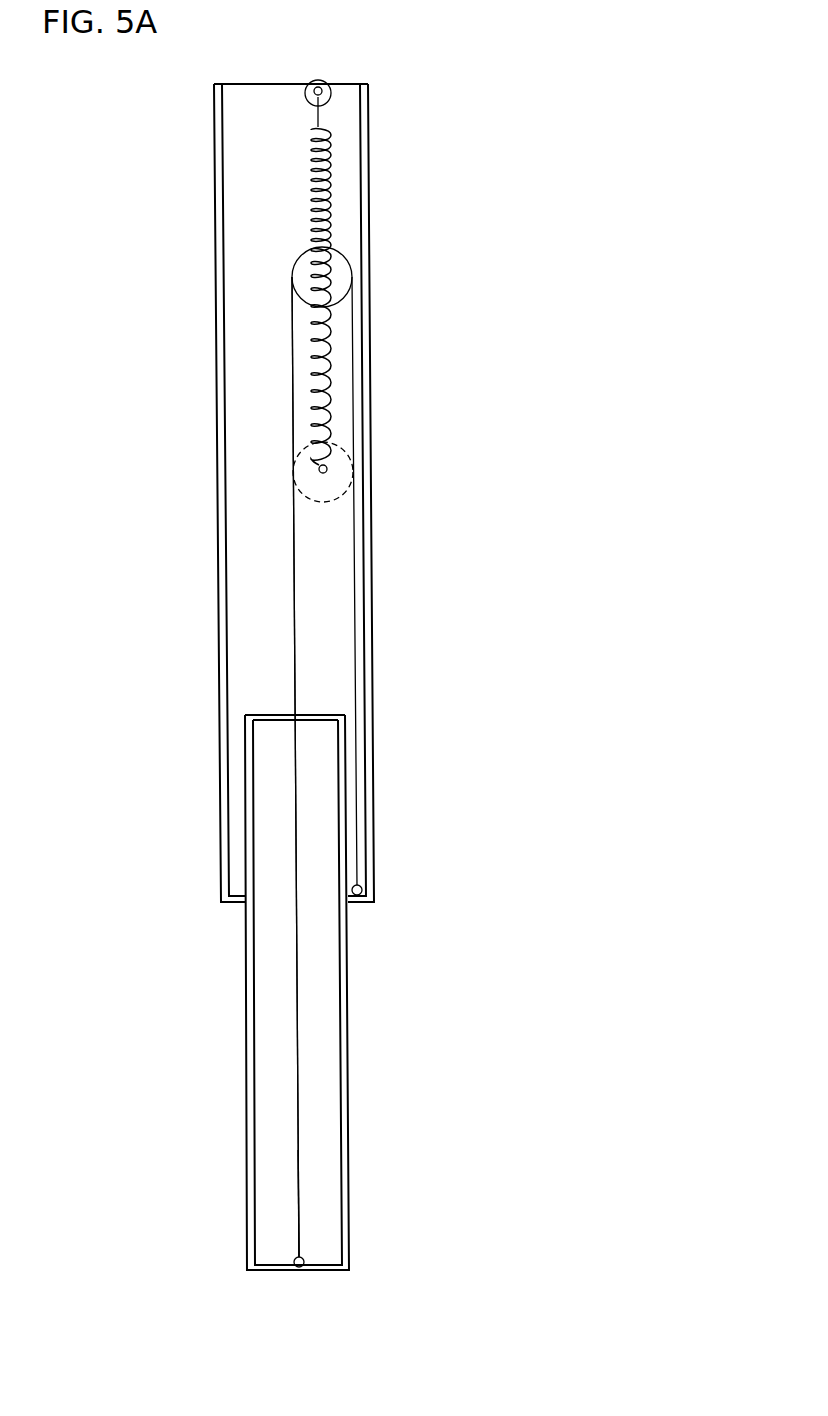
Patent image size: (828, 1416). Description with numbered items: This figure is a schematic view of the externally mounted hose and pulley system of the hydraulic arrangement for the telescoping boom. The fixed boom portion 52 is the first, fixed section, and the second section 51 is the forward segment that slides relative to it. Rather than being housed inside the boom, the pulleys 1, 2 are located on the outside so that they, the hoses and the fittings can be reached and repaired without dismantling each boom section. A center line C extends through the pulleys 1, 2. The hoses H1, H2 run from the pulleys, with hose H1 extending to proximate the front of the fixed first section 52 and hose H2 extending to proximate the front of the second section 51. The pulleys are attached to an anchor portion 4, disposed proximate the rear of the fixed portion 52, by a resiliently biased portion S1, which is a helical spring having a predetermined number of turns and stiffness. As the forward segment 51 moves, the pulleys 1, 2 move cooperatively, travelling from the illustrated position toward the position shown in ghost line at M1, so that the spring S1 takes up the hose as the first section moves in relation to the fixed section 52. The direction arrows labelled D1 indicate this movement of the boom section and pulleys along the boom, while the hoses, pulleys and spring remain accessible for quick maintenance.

The anchor portion 4 is at (330, 100).
The fixed boom portion 52 is at (343, 172).
The second section of the boom 51 is at (341, 1087).
The resiliently biased portion S1 is at (312, 162).
The hose H1 is at (344, 257).
The hose H2 is at (296, 1017).
The pulley 1 is at (302, 1234).
The pulley 2 is at (302, 1234).
The center line C is at (480, 277).
The ghost-line pulley position M1 is at (203, 502).
The direction of movement D1 is at (392, 317).